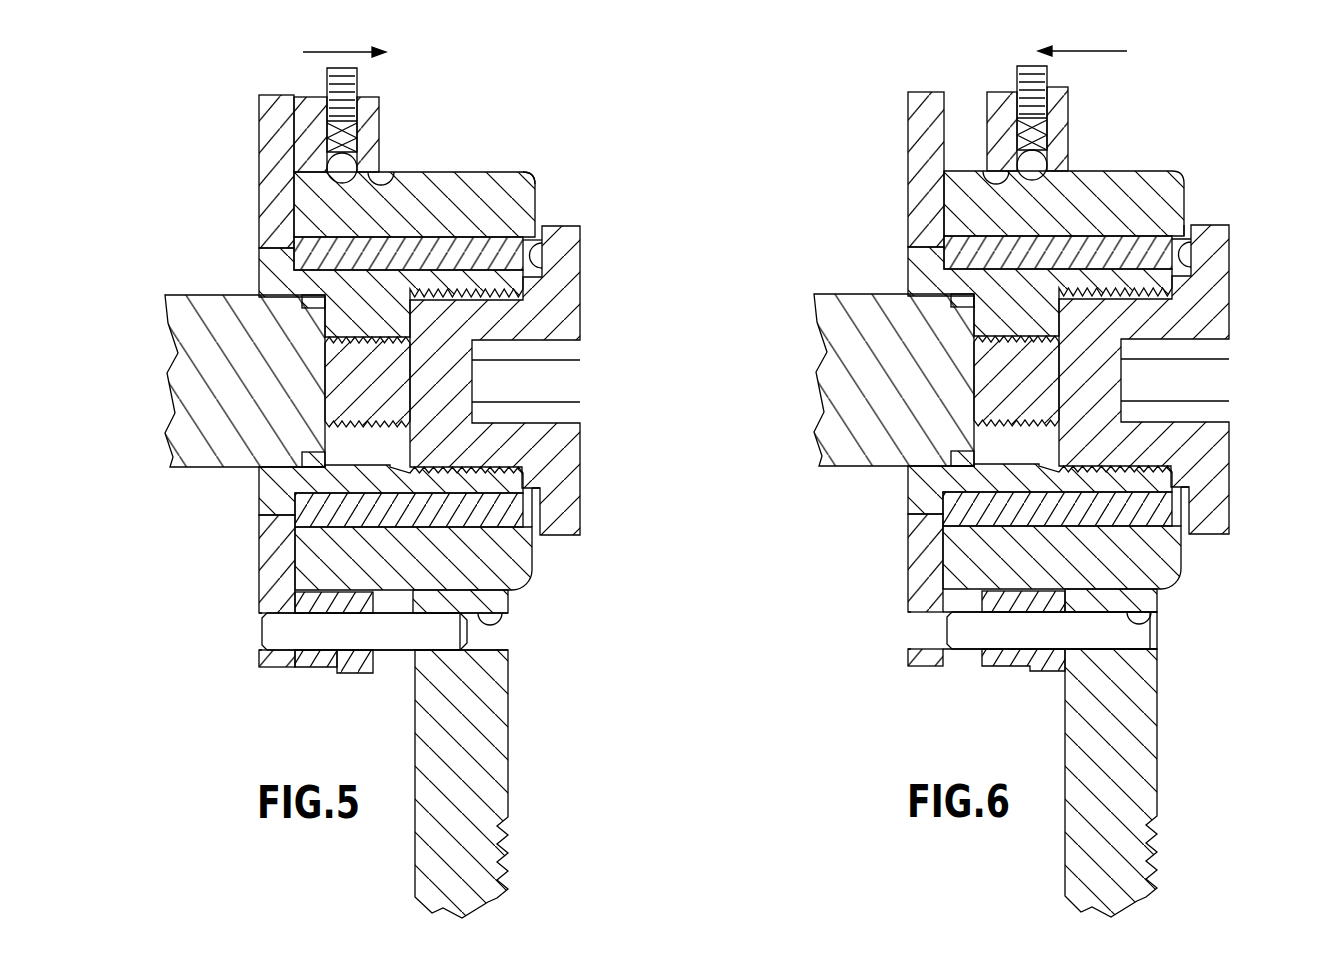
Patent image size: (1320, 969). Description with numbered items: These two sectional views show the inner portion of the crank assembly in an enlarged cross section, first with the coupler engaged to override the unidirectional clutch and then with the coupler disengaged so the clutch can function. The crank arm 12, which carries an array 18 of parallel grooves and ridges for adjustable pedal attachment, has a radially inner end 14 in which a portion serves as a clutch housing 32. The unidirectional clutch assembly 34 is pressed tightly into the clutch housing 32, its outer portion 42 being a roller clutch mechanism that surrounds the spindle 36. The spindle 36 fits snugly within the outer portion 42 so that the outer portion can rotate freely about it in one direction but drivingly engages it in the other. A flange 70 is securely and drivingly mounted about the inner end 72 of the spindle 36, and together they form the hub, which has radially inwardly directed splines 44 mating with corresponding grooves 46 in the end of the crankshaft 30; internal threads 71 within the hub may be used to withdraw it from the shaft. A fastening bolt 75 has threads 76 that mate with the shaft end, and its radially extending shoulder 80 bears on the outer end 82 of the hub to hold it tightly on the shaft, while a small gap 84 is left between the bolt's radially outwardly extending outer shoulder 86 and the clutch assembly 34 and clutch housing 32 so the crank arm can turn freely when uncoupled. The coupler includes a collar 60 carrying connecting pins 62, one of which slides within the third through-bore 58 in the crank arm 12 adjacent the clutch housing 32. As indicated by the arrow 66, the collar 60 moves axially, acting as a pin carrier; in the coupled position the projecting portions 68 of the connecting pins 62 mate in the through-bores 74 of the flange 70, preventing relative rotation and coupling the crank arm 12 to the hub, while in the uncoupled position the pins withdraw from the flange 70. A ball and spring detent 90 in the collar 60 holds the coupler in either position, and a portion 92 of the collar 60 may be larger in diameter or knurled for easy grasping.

In FIG. 5, the crank arm 12 is at (510, 742).
In FIG. 6, the crank arm 12 is at (1145, 753).
In FIG. 5, the radially inner end 14 is at (484, 172).
In FIG. 6, the radially inner end 14 is at (1063, 347).
In FIG. 5, the array of parallel grooves and ridges 18 is at (508, 862).
In FIG. 6, the array of parallel grooves and ridges 18 is at (1189, 859).
In FIG. 5, the crankshaft 30 is at (167, 297).
In FIG. 6, the crankshaft 30 is at (876, 394).
In FIG. 5, the clutch housing 32 is at (537, 187).
In FIG. 6, the clutch housing 32 is at (1216, 526).
In FIG. 5, the unidirectional clutch assembly 34 is at (498, 234).
In FIG. 6, the unidirectional clutch assembly 34 is at (1160, 183).
In FIG. 5, the spindle 36 is at (259, 495).
In FIG. 6, the spindle 36 is at (1040, 489).
In FIG. 5, the outer portion 42 is at (430, 237).
In FIG. 6, the outer portion 42 is at (1058, 198).
In FIG. 5, the splines 44 is at (318, 460).
In FIG. 6, the splines 44 is at (928, 312).
In FIG. 5, the grooves 46 is at (312, 303).
In FIG. 6, the grooves 46 is at (944, 435).
In FIG. 5, the third through-bore 58 is at (500, 620).
In FIG. 6, the third through-bore 58 is at (1085, 625).
In FIG. 5, the collar 60 is at (304, 97).
In FIG. 6, the collar 60 is at (1011, 392).
In FIG. 5, the connecting pins 62 is at (447, 650).
In FIG. 6, the connecting pins 62 is at (1189, 667).
In FIG. 5, the arrow 66 is at (340, 52).
In FIG. 6, the arrow 66 is at (1082, 39).
In FIG. 5, the projecting portion 68 is at (278, 652).
In FIG. 6, the projecting portion 68 is at (967, 681).
In FIG. 5, the flange 70 is at (259, 153).
In FIG. 6, the flange 70 is at (890, 379).
In FIG. 5, the internal threads 71 is at (448, 465).
In FIG. 6, the internal threads 71 is at (1092, 427).
In FIG. 5, the inner end of the spindle 72 is at (259, 275).
In FIG. 6, the inner end of the spindle 72 is at (1006, 291).
In FIG. 5, the through-bores 74 is at (264, 628).
In FIG. 6, the through-bores 74 is at (877, 629).
In FIG. 5, the fastening bolt 75 is at (581, 320).
In FIG. 6, the fastening bolt 75 is at (1178, 379).
In FIG. 5, the threads 76 is at (330, 428).
In FIG. 6, the threads 76 is at (982, 378).
In FIG. 5, the radially extending shoulder 80 is at (515, 497).
In FIG. 6, the radially extending shoulder 80 is at (1057, 509).
In FIG. 6, the outer end of the hub 82 is at (1236, 283).
In FIG. 5, the gap 84 is at (538, 528).
In FIG. 6, the gap 84 is at (1208, 204).
In FIG. 5, the outer shoulder 86 is at (547, 243).
In FIG. 6, the outer shoulder 86 is at (1228, 247).
In FIG. 5, the ball and spring detent 90 is at (345, 181).
In FIG. 6, the ball and spring detent 90 is at (1024, 187).
In FIG. 5, the portion of the collar 92 is at (357, 674).
In FIG. 6, the portion of the collar 92 is at (1094, 116).